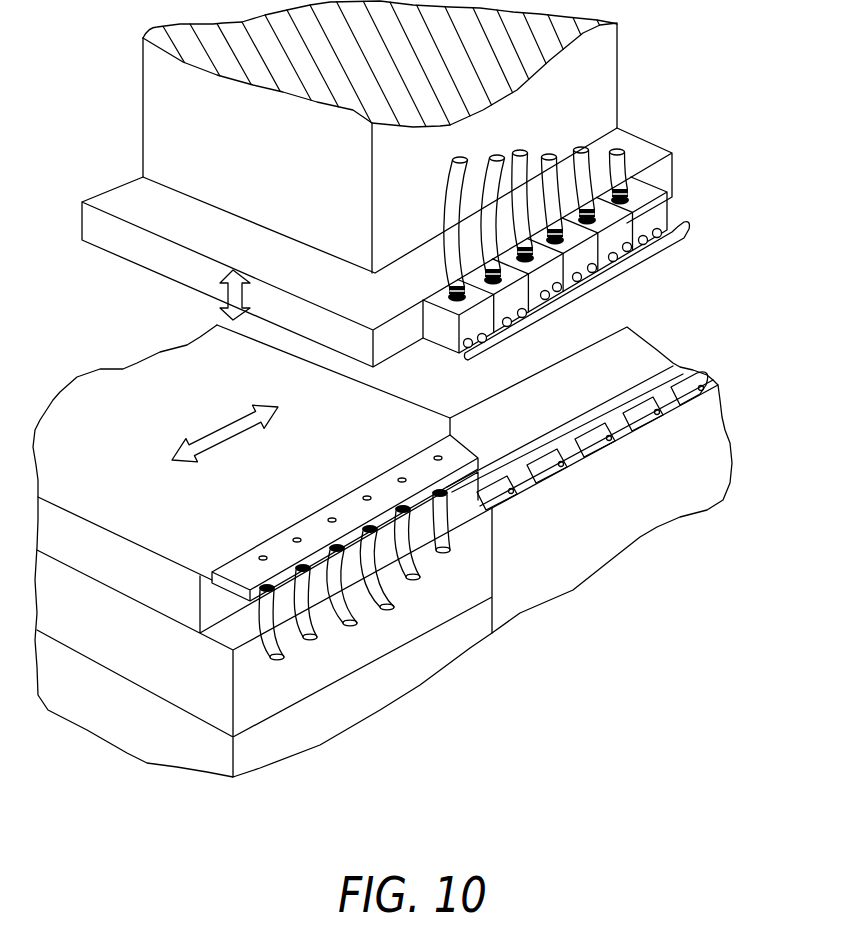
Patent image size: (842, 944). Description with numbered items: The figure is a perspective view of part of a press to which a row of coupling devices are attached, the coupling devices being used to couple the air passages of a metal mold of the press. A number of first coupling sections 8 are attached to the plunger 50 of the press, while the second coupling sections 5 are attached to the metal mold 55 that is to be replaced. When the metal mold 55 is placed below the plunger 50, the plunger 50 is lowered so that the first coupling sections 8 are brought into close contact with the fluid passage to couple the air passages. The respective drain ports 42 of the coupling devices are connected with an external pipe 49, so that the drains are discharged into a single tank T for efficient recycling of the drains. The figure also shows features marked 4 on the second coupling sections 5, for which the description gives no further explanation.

The plunger 50 is at (608, 67).
The metal mold 55 is at (148, 373).
The first coupling section 8 is at (443, 287).
The external pipe 49 is at (641, 231).
The drain port 42 is at (528, 318).
The second coupling section 5 is at (340, 508).
The holes 4 is at (294, 541).
The tank T is at (686, 220).